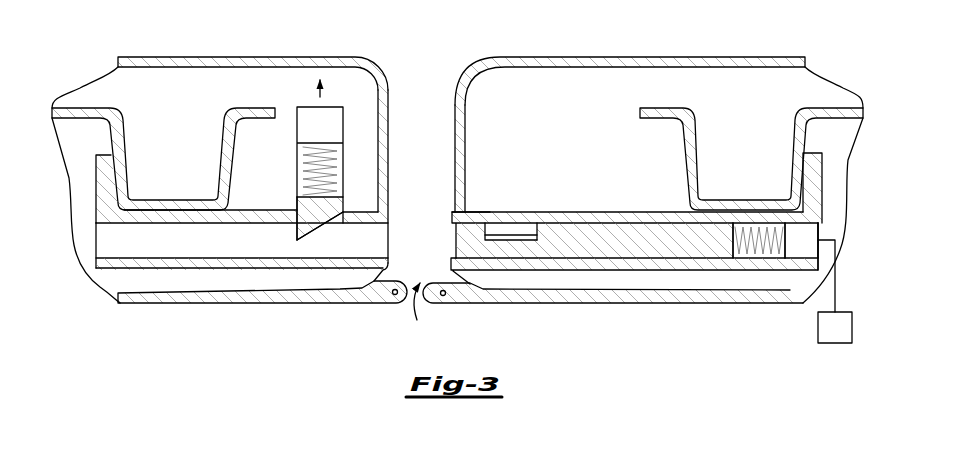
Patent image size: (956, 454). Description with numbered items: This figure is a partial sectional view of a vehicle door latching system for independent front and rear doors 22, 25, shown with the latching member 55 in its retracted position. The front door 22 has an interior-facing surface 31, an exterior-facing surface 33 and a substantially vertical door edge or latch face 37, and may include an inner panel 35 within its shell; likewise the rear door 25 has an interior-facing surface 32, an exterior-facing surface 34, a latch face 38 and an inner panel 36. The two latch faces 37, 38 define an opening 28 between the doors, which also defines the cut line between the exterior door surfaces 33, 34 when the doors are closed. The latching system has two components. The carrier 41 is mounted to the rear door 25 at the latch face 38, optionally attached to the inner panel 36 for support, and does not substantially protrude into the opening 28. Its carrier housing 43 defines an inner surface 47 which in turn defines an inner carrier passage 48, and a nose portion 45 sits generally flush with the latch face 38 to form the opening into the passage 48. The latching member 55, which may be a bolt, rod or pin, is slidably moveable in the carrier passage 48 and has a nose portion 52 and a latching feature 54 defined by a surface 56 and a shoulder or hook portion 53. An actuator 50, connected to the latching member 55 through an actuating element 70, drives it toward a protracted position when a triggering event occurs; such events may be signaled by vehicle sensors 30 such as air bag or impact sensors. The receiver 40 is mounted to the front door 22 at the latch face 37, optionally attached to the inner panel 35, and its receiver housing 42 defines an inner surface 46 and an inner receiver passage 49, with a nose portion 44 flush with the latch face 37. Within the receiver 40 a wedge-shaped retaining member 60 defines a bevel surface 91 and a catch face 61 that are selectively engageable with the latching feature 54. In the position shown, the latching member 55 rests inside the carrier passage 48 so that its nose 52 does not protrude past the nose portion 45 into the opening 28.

The front door 22 is at (97, 76).
The rear door 25 is at (838, 75).
The opening 28 is at (432, 162).
The sensor 30 is at (845, 340).
The interior-facing surface 31 is at (268, 57).
The interior-facing surface 32 is at (636, 60).
The exterior-facing surface 33 is at (253, 300).
The exterior-facing surface 34 is at (612, 297).
The inner panel 35 is at (78, 120).
The inner panel 36 is at (832, 118).
The latch face 37 is at (390, 97).
The latch face 38 is at (453, 120).
The receiver 40 is at (90, 233).
The carrier 41 is at (830, 228).
The receiver housing 42 is at (96, 182).
The carrier housing 43 is at (821, 190).
The nose portion 44 is at (357, 212).
The nose portion 45 is at (474, 212).
The inner surface 46 is at (103, 254).
The inner surface 47 is at (603, 226).
The inner carrier passage 48 is at (767, 253).
The inner receiver passage 49 is at (217, 252).
The actuator 50 is at (330, 107).
The nose portion 52 is at (455, 243).
The shoulder or hook portion 53 is at (501, 232).
The latching feature 54 is at (512, 232).
The surface 56 is at (531, 235).
The latching member 55 is at (666, 250).
The retaining member 60 is at (297, 200).
The catch face 61 is at (297, 229).
The actuating element 70 is at (331, 160).
The bevel surface 91 is at (317, 229).